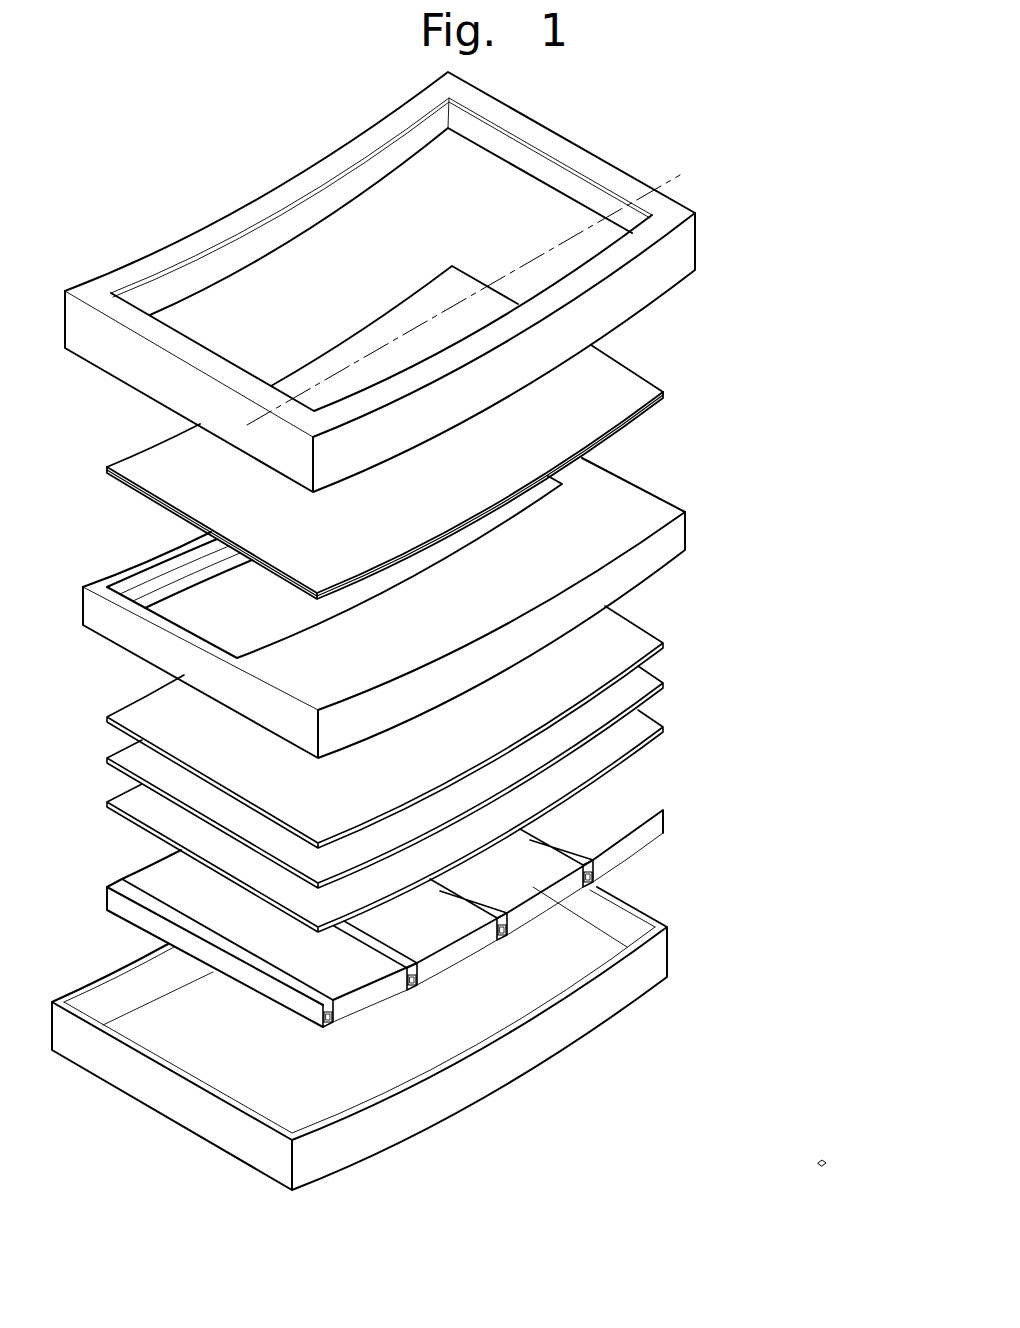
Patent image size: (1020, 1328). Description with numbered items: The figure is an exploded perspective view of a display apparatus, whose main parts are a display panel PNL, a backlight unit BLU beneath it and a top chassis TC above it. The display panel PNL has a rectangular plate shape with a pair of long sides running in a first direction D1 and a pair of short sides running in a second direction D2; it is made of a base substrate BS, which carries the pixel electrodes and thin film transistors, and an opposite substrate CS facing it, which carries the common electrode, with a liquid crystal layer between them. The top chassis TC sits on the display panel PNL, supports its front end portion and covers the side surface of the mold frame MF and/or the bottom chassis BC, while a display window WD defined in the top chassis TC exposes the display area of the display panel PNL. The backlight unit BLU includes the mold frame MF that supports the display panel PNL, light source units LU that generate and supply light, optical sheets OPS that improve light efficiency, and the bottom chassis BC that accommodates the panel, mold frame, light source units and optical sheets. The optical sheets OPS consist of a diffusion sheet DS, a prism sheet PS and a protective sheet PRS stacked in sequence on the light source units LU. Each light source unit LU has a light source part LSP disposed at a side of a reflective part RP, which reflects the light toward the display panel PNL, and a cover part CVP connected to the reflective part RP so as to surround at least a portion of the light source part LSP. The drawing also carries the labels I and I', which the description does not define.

The top chassis TC is at (685, 247).
The display panel PNL is at (760, 353).
The opposite substrate CS is at (648, 383).
The base substrate BS is at (647, 410).
The display window WD is at (505, 258).
The section line I is at (449, 303).
The section line I' is at (681, 141).
The backlight unit BLU is at (826, 512).
The mold frame MF is at (683, 527).
The optical sheets OPS is at (770, 603).
The protective sheet PRS is at (641, 643).
The prism sheet PS is at (641, 688).
The diffusion sheet DS is at (641, 733).
The light source unit LU is at (670, 815).
The reflective part RP is at (475, 945).
The light source part LSP is at (418, 983).
The cover part CVP is at (302, 1010).
The bottom chassis BC is at (660, 953).
The first direction D1 is at (818, 1163).
The second direction D2 is at (818, 1163).